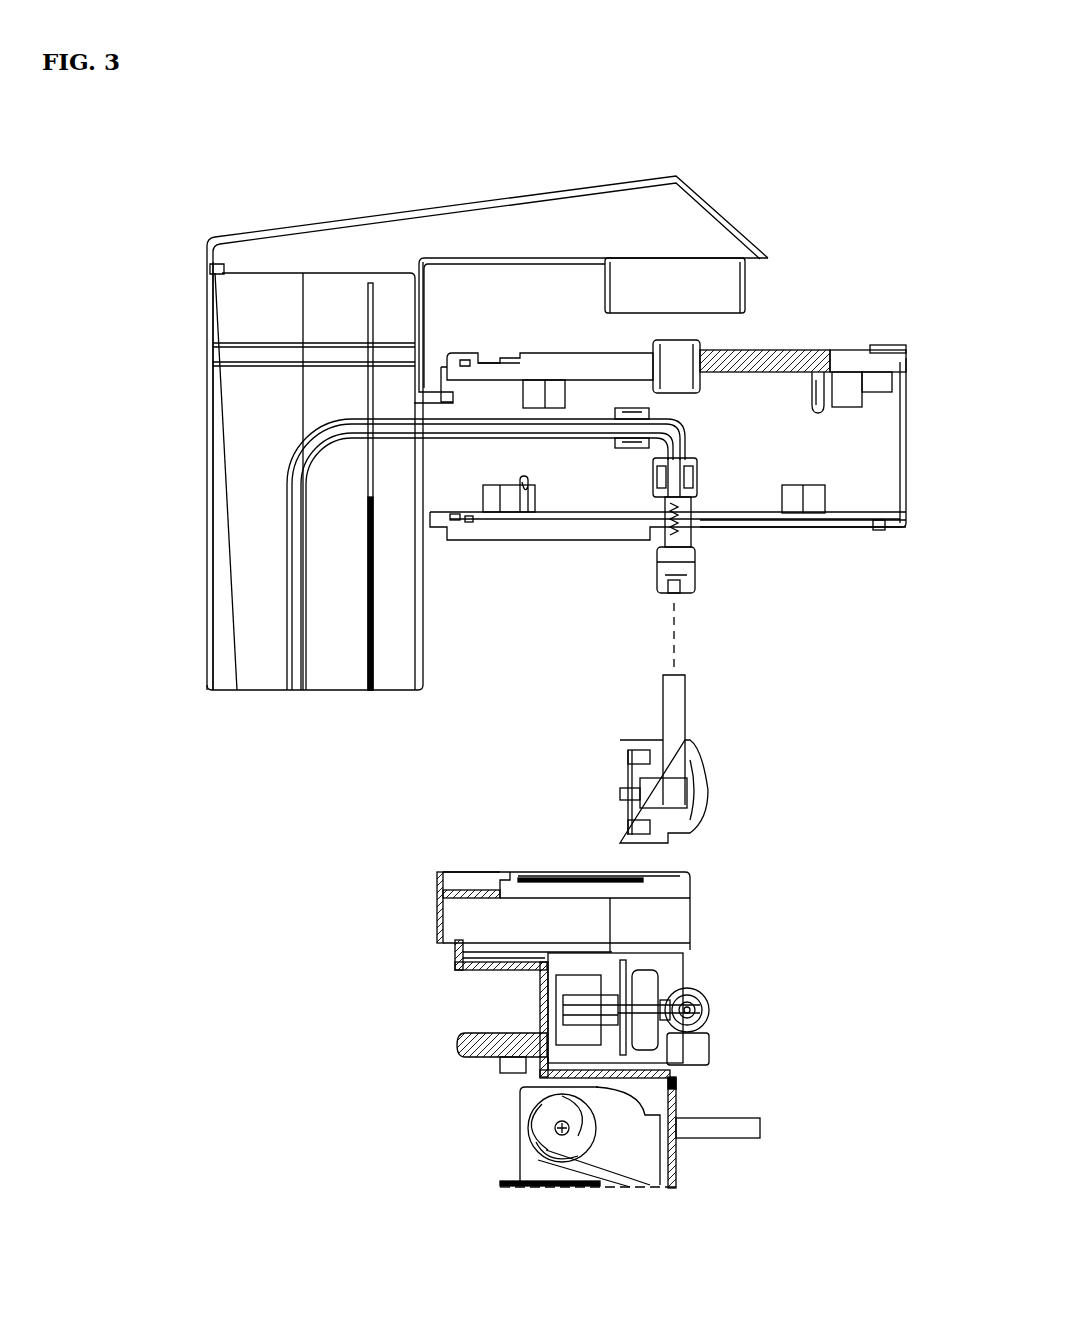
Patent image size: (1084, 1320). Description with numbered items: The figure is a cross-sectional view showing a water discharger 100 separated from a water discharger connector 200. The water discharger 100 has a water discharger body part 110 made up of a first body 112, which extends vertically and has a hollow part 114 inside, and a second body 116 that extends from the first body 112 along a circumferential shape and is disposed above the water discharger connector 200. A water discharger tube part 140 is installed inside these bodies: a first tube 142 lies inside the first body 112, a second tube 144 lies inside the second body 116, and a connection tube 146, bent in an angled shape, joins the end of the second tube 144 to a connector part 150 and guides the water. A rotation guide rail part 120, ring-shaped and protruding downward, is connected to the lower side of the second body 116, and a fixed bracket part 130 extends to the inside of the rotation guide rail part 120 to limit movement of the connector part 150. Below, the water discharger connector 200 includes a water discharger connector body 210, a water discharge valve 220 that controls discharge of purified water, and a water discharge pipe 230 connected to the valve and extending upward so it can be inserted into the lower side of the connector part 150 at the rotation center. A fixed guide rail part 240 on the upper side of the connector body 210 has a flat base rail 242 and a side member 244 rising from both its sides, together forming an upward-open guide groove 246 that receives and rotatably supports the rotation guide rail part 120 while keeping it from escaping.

The water discharger 100 is at (830, 266).
The water discharger body part 110 is at (598, 131).
The first body 112 is at (470, 206).
The hollow part 114 is at (250, 648).
The second body 116 is at (553, 352).
The rotation guide rail part 120 is at (883, 532).
The fixed bracket part 130 is at (597, 535).
The water discharger tube part 140 is at (272, 548).
The first tube 142 is at (303, 655).
The second tube 144 is at (478, 418).
The connection tube 146 is at (703, 338).
The connector part 150 is at (700, 488).
The water discharger connector 200 is at (481, 1085).
The water discharger connector body 210 is at (450, 944).
The water discharge valve 220 is at (673, 1077).
The water discharge pipe 230 is at (685, 700).
The fixed guide rail part 240 is at (450, 910).
The base rail 242 is at (498, 884).
The side member 244 is at (437, 873).
The guide groove 246 is at (468, 886).